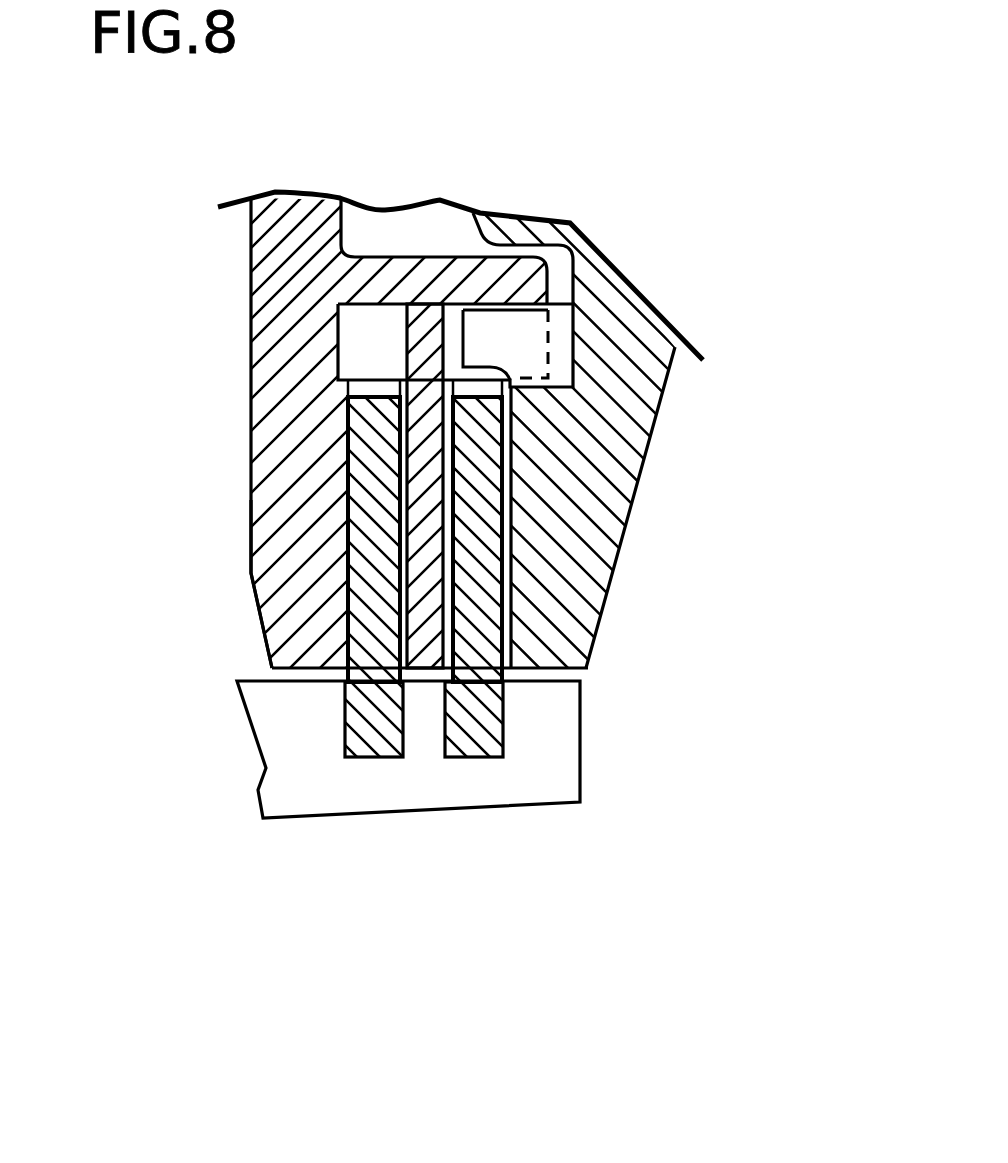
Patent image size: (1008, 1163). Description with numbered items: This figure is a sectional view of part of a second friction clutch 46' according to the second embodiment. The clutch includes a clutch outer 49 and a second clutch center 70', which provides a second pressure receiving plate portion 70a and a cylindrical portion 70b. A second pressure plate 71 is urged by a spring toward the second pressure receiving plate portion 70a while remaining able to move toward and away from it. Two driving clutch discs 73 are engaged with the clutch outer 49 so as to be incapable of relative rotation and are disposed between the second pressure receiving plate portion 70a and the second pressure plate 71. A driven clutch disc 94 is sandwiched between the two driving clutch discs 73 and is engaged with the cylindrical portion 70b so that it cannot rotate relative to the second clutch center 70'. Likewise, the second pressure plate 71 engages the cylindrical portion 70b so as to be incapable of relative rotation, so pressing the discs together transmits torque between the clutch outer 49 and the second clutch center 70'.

The second friction clutch 46' is at (569, 430).
The second clutch center 70' is at (432, 425).
The second pressure receiving plate portion 70a is at (267, 562).
The cylindrical portion 70b is at (438, 263).
The second pressure plate 71 is at (580, 593).
The driving clutch discs 73 is at (378, 740).
The driven clutch disc 94 is at (412, 527).
The clutch outer 49 is at (482, 832).